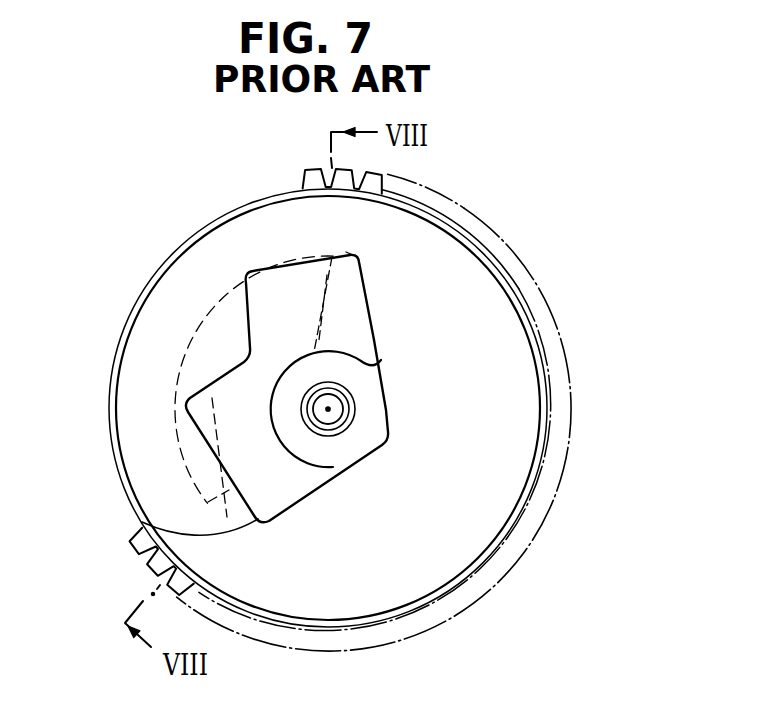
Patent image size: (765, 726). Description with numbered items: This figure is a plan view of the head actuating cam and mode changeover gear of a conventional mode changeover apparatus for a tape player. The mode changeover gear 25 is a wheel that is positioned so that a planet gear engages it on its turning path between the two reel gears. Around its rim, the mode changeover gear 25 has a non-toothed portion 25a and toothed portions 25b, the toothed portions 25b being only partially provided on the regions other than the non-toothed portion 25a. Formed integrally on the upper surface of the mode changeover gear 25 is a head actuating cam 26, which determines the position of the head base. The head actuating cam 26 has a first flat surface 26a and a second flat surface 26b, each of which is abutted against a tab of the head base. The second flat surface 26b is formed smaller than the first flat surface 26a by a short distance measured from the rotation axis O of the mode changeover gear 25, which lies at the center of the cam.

The mode changeover gear 25 is at (487, 603).
The non-toothed portion 25a is at (170, 262).
The toothed portions 25b is at (552, 508).
The head actuating cam 26 is at (357, 323).
The first flat surface 26a is at (347, 251).
The second flat surface 26b is at (142, 522).
The rotation axis O is at (331, 411).